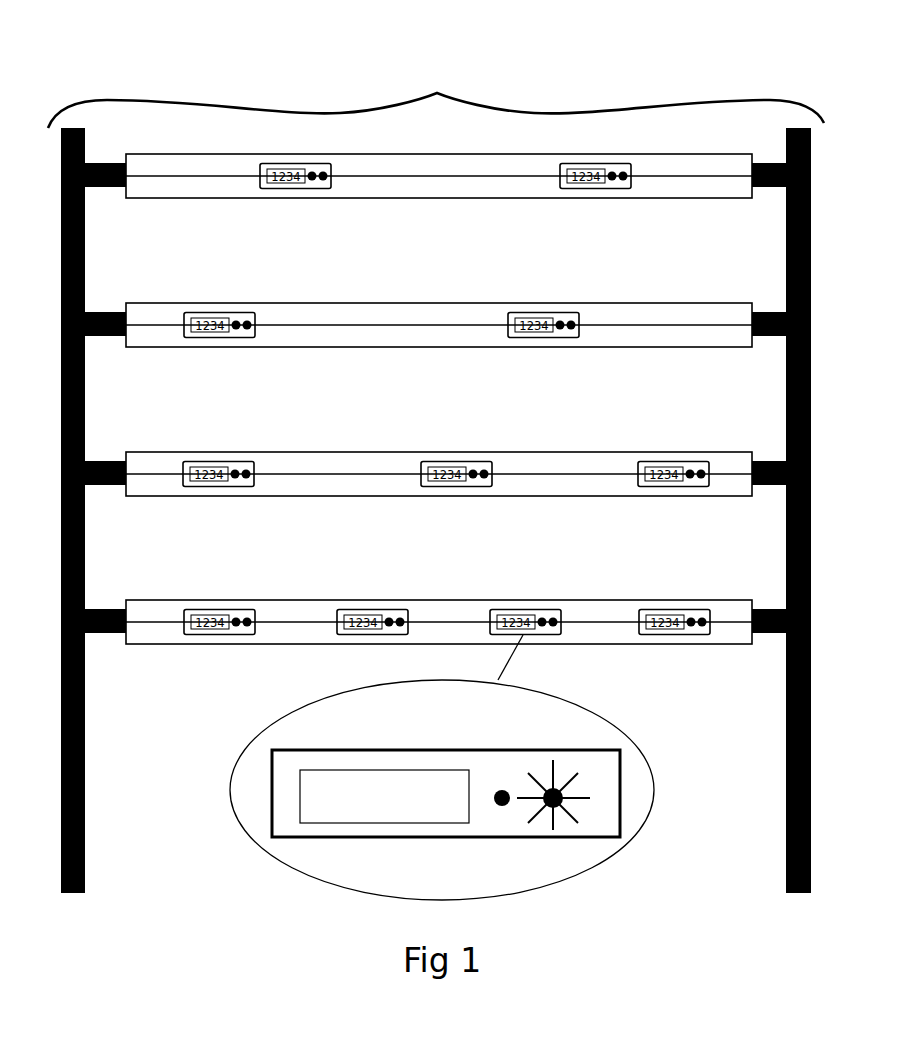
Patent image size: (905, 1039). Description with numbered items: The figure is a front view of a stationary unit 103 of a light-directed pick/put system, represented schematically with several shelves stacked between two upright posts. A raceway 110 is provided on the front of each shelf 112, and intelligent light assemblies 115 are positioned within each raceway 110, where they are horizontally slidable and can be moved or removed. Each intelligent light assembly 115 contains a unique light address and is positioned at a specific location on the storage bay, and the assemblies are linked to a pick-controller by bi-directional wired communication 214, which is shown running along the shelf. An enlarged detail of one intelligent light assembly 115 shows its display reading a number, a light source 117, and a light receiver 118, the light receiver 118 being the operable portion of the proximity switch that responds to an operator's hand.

The stationary unit 103 is at (437, 88).
The raceway 110 is at (735, 600).
The shelf 112 is at (97, 610).
The intelligent light assembly 115 is at (678, 610).
The light source 117 is at (563, 803).
The light receiver 118 is at (502, 806).
The bi-directional wired communication 214 is at (297, 622).